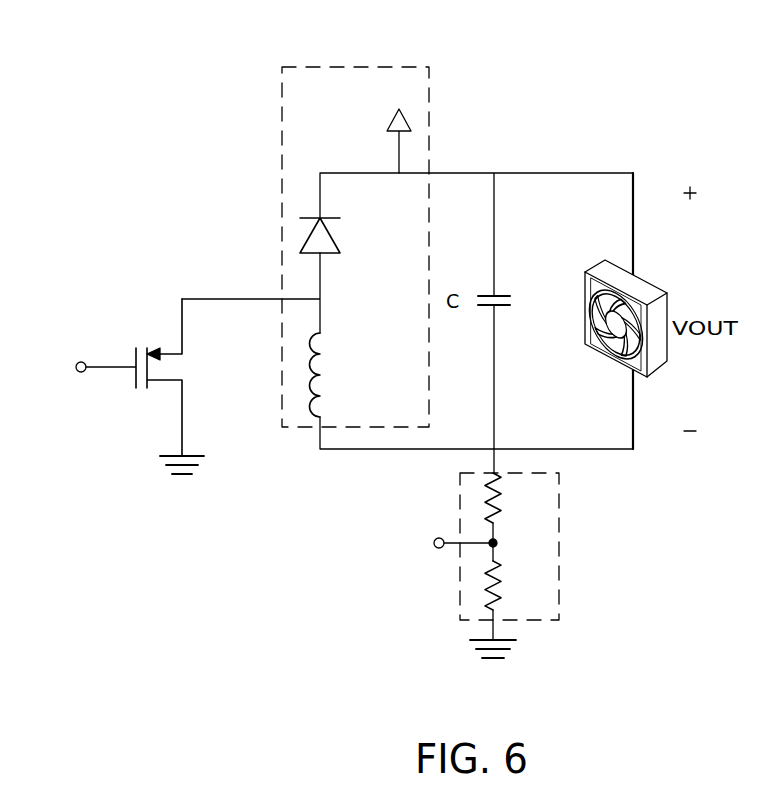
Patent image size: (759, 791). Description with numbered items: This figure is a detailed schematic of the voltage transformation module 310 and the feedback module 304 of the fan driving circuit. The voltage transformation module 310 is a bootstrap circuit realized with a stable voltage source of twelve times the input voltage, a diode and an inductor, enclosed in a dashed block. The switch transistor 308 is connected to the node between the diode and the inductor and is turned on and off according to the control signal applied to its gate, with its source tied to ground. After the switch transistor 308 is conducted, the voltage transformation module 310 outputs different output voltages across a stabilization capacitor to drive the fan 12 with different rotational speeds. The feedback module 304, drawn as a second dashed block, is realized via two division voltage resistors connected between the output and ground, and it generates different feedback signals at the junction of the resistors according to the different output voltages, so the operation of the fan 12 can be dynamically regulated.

The voltage transformation module 310 is at (428, 66).
The switch transistor 308 is at (180, 368).
The feedback module 304 is at (560, 547).
The fan 12 is at (645, 290).